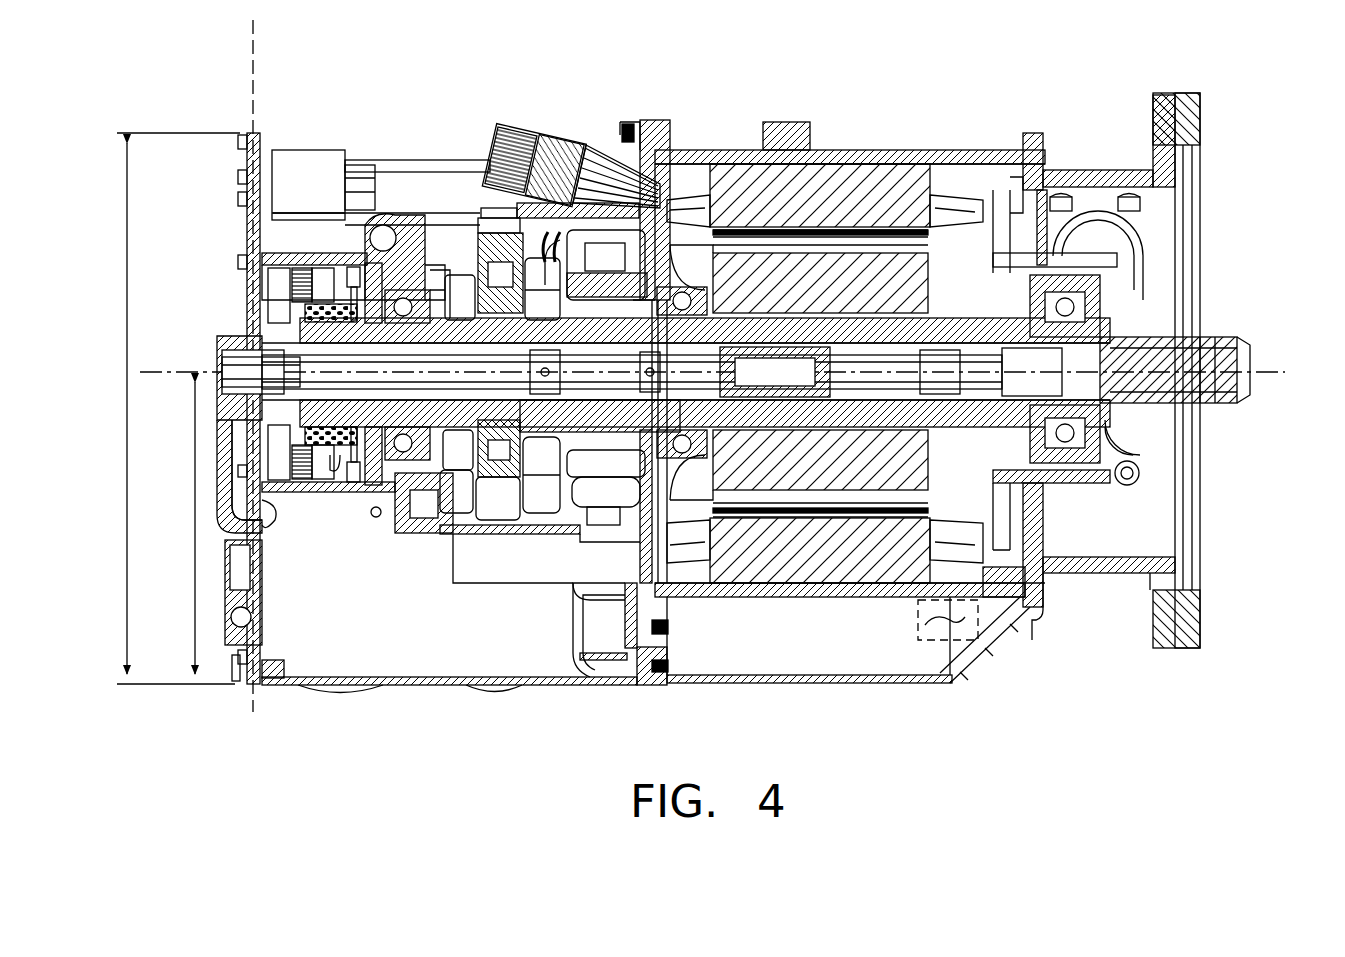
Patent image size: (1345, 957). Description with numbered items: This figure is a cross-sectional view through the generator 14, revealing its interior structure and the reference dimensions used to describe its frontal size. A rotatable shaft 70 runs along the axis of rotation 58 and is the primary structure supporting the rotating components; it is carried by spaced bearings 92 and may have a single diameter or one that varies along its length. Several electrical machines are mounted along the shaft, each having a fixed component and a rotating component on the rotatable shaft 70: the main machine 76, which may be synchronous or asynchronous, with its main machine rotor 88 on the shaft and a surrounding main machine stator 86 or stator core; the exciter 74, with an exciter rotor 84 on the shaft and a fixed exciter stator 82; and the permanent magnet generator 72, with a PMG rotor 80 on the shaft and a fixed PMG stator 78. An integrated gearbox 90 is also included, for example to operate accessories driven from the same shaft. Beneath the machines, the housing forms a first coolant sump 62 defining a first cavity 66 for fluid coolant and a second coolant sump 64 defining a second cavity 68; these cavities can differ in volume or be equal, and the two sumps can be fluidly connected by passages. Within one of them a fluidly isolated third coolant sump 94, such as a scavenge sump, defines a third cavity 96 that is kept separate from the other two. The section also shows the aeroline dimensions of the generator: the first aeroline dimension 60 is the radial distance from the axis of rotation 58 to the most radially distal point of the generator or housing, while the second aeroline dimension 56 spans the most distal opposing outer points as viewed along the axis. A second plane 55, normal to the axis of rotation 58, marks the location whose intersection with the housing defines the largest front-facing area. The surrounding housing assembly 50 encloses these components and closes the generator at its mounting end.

The generator 14 is at (558, 54).
The motor housing assembly 50 is at (1218, 162).
The second plane 55 is at (253, 48).
The second aeroline dimension 56 is at (127, 285).
The axis of rotation 58 is at (143, 372).
The first aeroline dimension 60 is at (195, 565).
The first coolant sump 62 is at (465, 684).
The second coolant sump 64 is at (805, 680).
The first cavity 66 is at (385, 597).
The second cavity 68 is at (752, 635).
The rotatable shaft 70 is at (1130, 330).
The permanent magnet generator 72 is at (478, 202).
The exciter 74 is at (604, 205).
The main machine 76 is at (893, 140).
The PMG stator 78 is at (483, 285).
The PMG rotor 80 is at (452, 262).
The exciter stator 82 is at (642, 275).
The exciter rotor 84 is at (640, 280).
The stator 86 is at (810, 185).
The main machine rotor 88 is at (812, 275).
The integrated gearbox 90 is at (302, 146).
The bearings 92 is at (1050, 250).
The third coolant sump 94 is at (975, 622).
The third cavity 96 is at (955, 618).